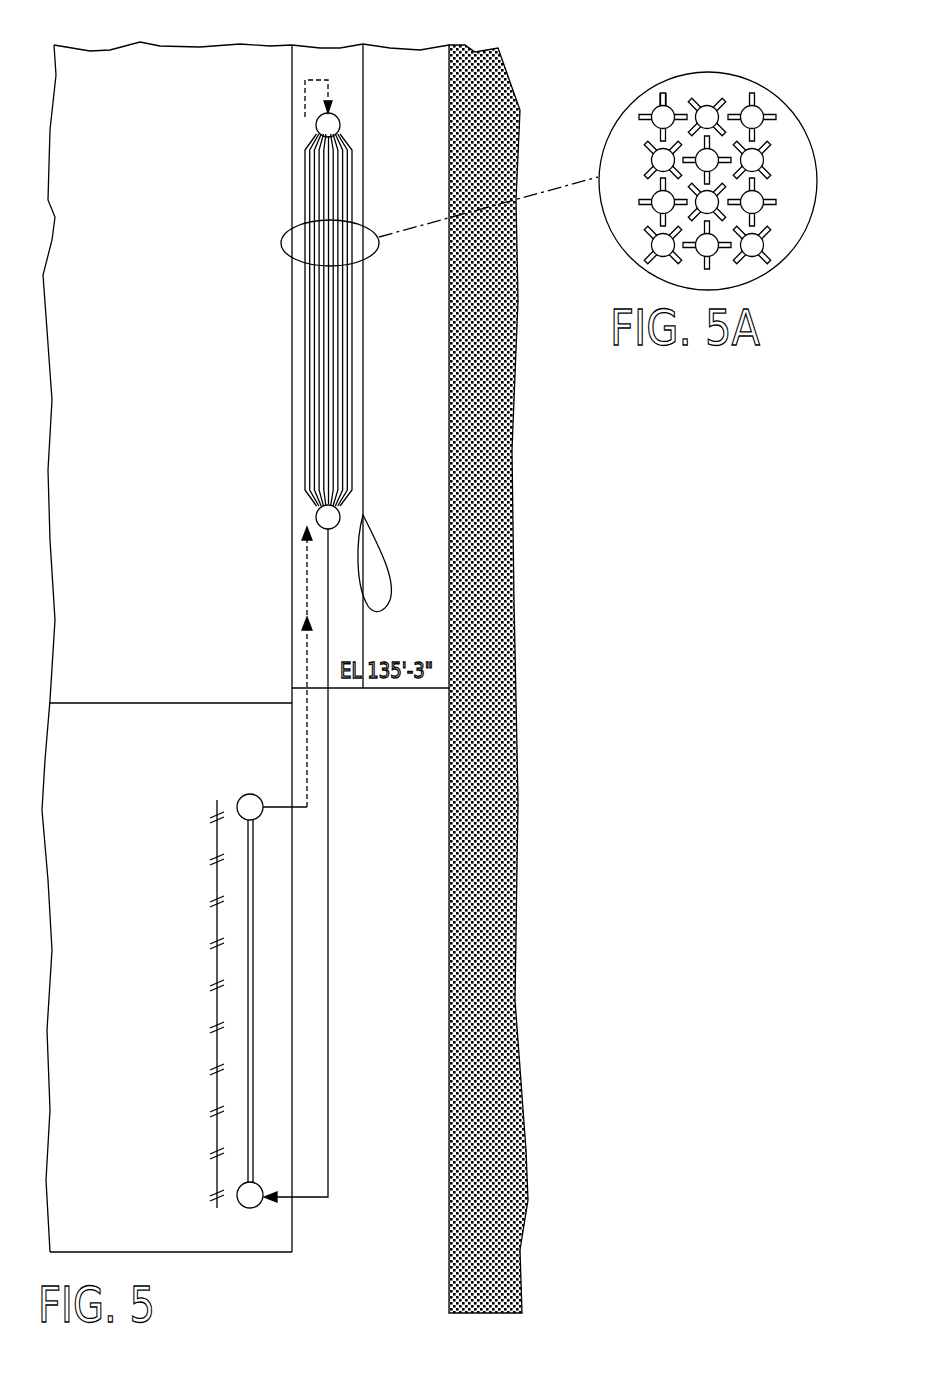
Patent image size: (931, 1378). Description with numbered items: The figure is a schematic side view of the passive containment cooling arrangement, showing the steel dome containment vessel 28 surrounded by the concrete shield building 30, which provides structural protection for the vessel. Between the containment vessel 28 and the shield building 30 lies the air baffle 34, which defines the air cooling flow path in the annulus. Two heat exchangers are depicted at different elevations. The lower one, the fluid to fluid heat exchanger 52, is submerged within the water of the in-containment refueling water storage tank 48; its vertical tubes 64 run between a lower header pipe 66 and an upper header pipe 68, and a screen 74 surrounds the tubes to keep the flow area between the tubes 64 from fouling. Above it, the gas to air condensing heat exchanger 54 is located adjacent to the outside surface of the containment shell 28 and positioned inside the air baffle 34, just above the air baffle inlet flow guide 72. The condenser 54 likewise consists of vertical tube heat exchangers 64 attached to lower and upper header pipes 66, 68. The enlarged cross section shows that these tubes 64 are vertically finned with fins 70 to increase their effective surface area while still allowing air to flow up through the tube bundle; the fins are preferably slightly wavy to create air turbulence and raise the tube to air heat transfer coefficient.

In FIG. 5, the steel dome containment vessel 28 is at (292, 78).
In FIG. 5, the concrete shield building 30 is at (515, 560).
In FIG. 5, the air baffle 34 is at (365, 147).
In FIG. 5, the in-containment refueling water storage tank 48 is at (150, 834).
In FIG. 5, the heat exchanger 52 is at (283, 929).
In FIG. 5, the condensing heat exchanger 54 is at (256, 266).
In FIG. 5, the vertical tube heat exchangers 64 is at (253, 1014).
In FIG. 5A, the vertical tube heat exchangers 64 is at (762, 113).
In FIG. 5, the lower header pipe 66 is at (255, 1208).
In FIG. 5, the upper header pipe 68 is at (246, 795).
In FIG. 5A, the fins 70 is at (712, 100).
In FIG. 5, the air baffle inlet flow guide 72 is at (385, 553).
In FIG. 5, the screen 74 is at (212, 1020).